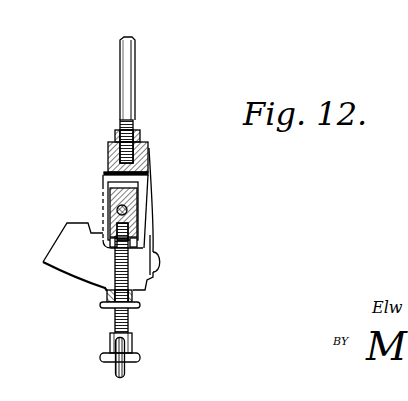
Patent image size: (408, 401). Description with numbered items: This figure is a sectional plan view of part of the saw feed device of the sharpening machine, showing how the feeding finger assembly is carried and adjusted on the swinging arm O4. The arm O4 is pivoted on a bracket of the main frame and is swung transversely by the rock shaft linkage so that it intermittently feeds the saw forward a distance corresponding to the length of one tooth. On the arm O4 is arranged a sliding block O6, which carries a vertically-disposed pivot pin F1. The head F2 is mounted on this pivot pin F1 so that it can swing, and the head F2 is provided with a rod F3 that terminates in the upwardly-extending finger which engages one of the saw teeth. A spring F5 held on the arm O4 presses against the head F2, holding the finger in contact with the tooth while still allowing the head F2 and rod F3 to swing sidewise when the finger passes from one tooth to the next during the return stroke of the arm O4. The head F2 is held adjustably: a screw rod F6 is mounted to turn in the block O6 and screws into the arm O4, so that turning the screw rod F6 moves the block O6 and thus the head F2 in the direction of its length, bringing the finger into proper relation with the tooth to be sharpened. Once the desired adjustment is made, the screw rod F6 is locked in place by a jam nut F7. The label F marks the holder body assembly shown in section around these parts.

The rod F3 is at (137, 86).
The head F2 is at (112, 170).
The holder body F is at (149, 153).
The sliding block O6 is at (132, 202).
The pivot pin F1 is at (118, 209).
The spring F5 is at (157, 236).
The arm O4 is at (54, 262).
The jam nut F7 is at (134, 296).
The screw rod F6 is at (130, 323).